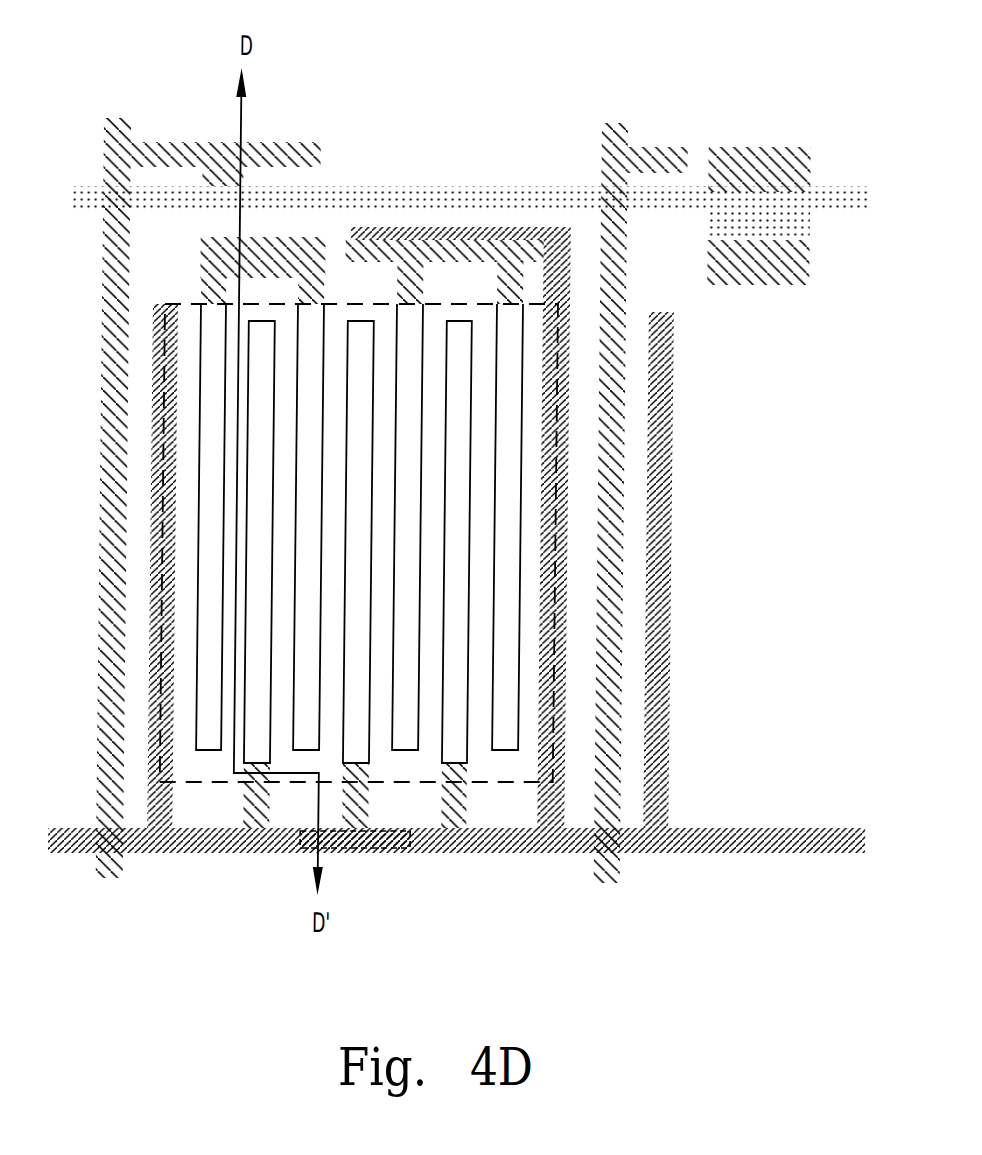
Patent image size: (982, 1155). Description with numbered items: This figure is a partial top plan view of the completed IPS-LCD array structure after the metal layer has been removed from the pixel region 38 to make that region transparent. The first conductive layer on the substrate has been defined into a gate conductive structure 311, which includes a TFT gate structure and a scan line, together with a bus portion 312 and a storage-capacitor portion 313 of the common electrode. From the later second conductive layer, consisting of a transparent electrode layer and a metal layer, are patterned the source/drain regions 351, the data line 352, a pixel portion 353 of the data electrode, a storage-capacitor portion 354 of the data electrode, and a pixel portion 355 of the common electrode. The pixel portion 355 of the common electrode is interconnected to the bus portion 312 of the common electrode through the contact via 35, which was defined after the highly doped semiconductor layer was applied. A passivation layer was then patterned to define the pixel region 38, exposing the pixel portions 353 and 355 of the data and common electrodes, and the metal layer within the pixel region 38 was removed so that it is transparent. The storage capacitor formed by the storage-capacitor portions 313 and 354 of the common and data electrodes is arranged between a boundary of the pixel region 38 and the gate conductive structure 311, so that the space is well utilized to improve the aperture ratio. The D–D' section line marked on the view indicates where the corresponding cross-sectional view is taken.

The gate conductive structure 311 is at (406, 195).
The bus portion of the common electrode 312 is at (221, 847).
The storage-capacitor portion of the common electrode 313 is at (504, 233).
The contact via 35 is at (379, 848).
The source/drain regions 351 is at (289, 247).
The data line 352 is at (108, 163).
The pixel portion of the data electrode 353 is at (511, 632).
The storage-capacitor portion of the data electrode 354 is at (456, 250).
The pixel portion of the common electrode 355 is at (260, 610).
The pixel region 38 is at (535, 575).